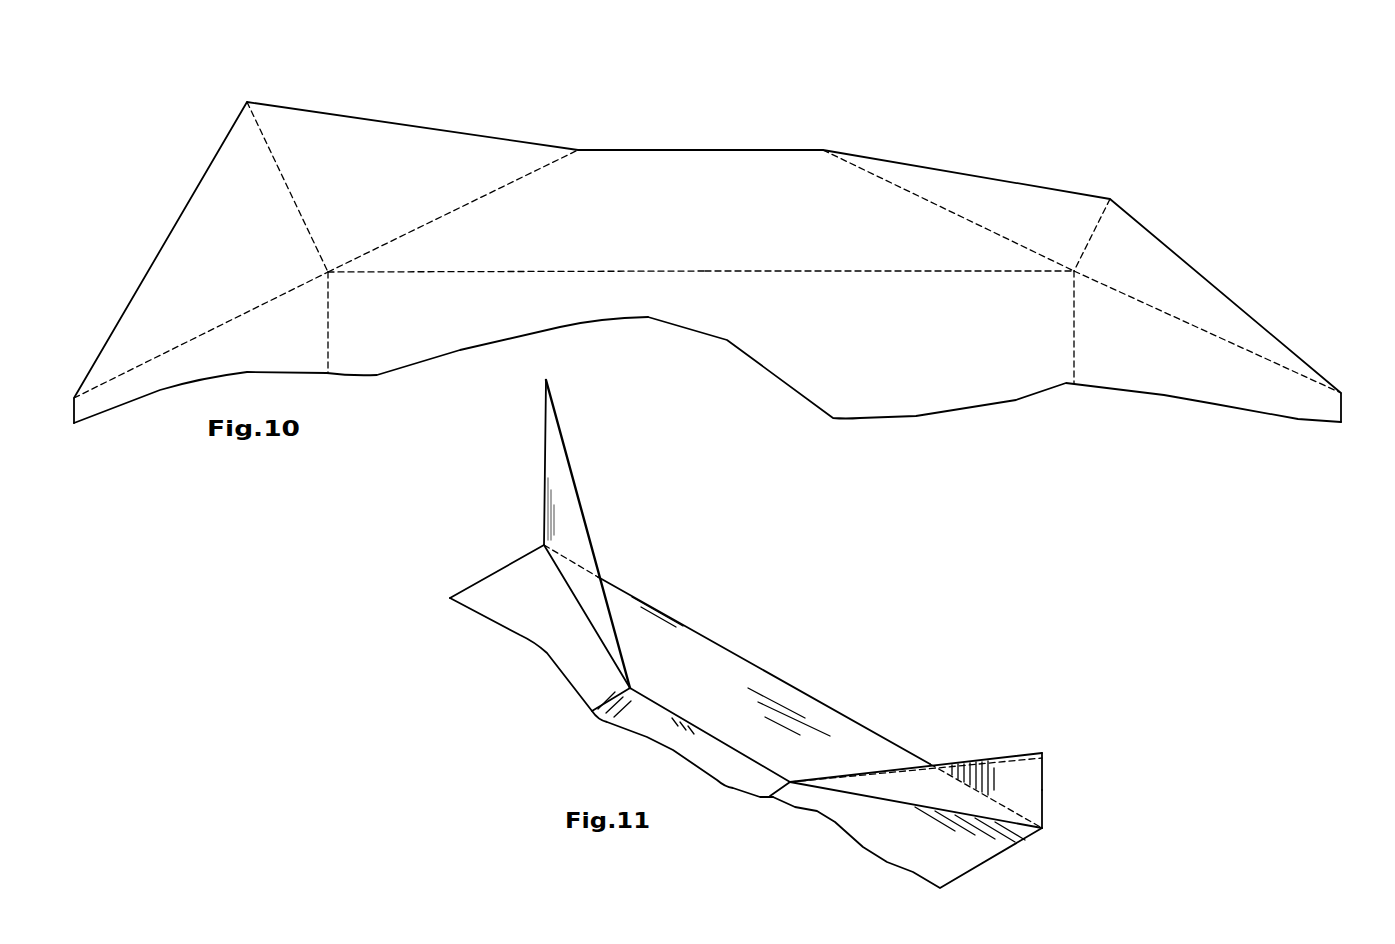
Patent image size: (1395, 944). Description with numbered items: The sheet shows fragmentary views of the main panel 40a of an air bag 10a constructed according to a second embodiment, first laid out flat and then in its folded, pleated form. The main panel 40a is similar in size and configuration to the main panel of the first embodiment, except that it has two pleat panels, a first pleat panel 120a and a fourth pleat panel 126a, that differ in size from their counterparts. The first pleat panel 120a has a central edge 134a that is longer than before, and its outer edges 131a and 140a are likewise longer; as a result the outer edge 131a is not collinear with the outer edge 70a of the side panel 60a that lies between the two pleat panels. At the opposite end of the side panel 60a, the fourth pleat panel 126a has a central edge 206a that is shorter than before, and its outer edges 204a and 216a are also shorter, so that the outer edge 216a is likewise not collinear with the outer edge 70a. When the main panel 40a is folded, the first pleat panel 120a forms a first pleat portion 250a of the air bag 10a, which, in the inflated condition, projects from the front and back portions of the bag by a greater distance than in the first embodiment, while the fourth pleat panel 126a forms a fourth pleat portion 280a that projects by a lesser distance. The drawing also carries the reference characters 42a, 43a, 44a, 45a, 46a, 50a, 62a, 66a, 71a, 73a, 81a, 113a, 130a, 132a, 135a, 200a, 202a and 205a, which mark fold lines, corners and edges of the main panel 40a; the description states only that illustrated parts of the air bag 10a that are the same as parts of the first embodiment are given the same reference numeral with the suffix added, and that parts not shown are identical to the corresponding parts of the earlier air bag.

In FIG. 10, the air bag 10a is at (680, 104).
In FIG. 11, the air bag 10a is at (853, 628).
In FIG. 10, the main panel 40a is at (769, 134).
In FIG. 11, the main panel 40a is at (704, 605).
In FIG. 10, the fold line 42a is at (706, 270).
In FIG. 10, the corner 43a is at (1073, 272).
In FIG. 11, the corner 43a is at (1042, 830).
In FIG. 10, the fold line segment 44a is at (880, 272).
In FIG. 10, the corner 45a is at (330, 274).
In FIG. 11, the corner 45a is at (543, 545).
In FIG. 10, the fold line 46a is at (330, 331).
In FIG. 10, the fold line 50a is at (1074, 323).
In FIG. 10, the side panel 60a is at (689, 158).
In FIG. 11, the side panel 60a is at (755, 665).
In FIG. 10, the bottom edge portion 62a is at (316, 352).
In FIG. 11, the bottom edge portion 62a is at (489, 590).
In FIG. 10, the bottom edge portion 66a is at (1072, 362).
In FIG. 11, the bottom edge portion 66a is at (948, 868).
In FIG. 10, the outer edge of side panel 70a is at (632, 150).
In FIG. 10, the corner 71a is at (823, 149).
In FIG. 11, the corner 71a is at (790, 780).
In FIG. 10, the corner 73a is at (580, 148).
In FIG. 11, the corner 73a is at (632, 688).
In FIG. 10, the corner 81a is at (74, 393).
In FIG. 11, the corner 81a is at (587, 616).
In FIG. 10, the corner 113a is at (1341, 392).
In FIG. 11, the corner 113a is at (916, 770).
In FIG. 10, the first pleat panel 120a is at (437, 117).
In FIG. 11, the first pleat panel 120a is at (525, 475).
In FIG. 10, the fourth pleat panel 126a is at (1050, 175).
In FIG. 11, the fourth pleat panel 126a is at (982, 742).
In FIG. 10, the panel portion 130a is at (363, 140).
In FIG. 10, the outer edge of first pleat panel 131a is at (310, 108).
In FIG. 10, the panel portion 132a is at (200, 263).
In FIG. 10, the central edge of first pleat panel 134a is at (293, 191).
In FIG. 11, the central edge of first pleat panel 134a is at (543, 422).
In FIG. 10, the corner 135a is at (247, 102).
In FIG. 11, the corner 135a is at (547, 381).
In FIG. 10, the outer edge of first pleat panel 140a is at (217, 150).
In FIG. 10, the panel portion 200a is at (1205, 309).
In FIG. 10, the panel portion 202a is at (963, 192).
In FIG. 10, the outer edge of fourth pleat panel 204a is at (1174, 247).
In FIG. 10, the corner 205a is at (1110, 199).
In FIG. 11, the corner 205a is at (1042, 753).
In FIG. 10, the central edge of fourth pleat panel 206a is at (1079, 254).
In FIG. 11, the central edge of fourth pleat panel 206a is at (1042, 777).
In FIG. 10, the outer edge of fourth pleat panel 216a is at (887, 160).
In FIG. 10, the first pleat portion 250a is at (492, 116).
In FIG. 11, the first pleat portion 250a is at (603, 519).
In FIG. 10, the fourth pleat portion 280a is at (1167, 212).
In FIG. 11, the fourth pleat portion 280a is at (1068, 793).